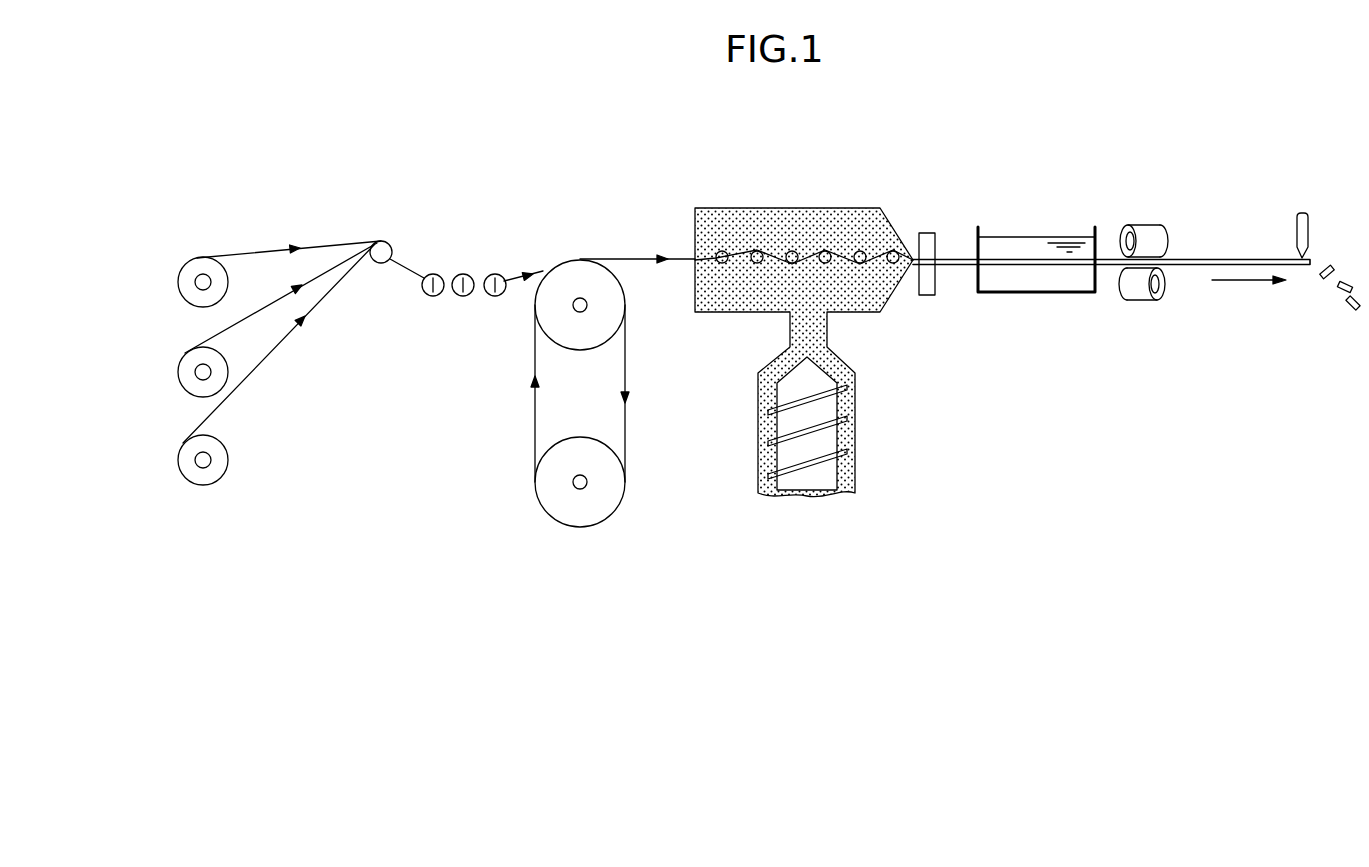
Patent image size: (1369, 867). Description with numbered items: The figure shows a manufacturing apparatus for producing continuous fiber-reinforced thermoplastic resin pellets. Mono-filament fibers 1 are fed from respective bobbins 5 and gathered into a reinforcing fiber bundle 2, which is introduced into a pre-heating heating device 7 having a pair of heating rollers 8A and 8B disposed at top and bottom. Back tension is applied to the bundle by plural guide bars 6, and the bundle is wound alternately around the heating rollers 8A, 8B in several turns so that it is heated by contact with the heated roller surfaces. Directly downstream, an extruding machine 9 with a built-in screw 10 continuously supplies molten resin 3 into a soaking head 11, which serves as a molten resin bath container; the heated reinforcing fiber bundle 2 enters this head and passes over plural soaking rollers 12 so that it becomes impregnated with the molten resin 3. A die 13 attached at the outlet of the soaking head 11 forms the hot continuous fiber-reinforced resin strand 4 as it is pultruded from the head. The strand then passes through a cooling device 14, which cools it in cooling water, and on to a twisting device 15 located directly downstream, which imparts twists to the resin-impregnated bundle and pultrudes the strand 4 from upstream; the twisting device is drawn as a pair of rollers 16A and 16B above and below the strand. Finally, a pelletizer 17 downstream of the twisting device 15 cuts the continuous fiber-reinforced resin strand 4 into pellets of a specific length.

The mono-filament fibers 1 is at (243, 253).
The reinforcing fiber bundle 2 is at (401, 287).
The molten resin 3 is at (812, 220).
The continuous fiber-reinforced resin strand 4 is at (963, 258).
The bobbins 5 is at (186, 262).
The guide bars 6 is at (432, 273).
The pre-heating heating device 7 is at (559, 392).
The heating roller 8A is at (545, 305).
The heating roller 8B is at (545, 484).
The extruding machine 9 is at (857, 395).
The screw 10 is at (828, 435).
The soaking head 11 is at (757, 208).
The soaking rollers 12 is at (722, 251).
The die 13 is at (927, 233).
The cooling device 14 is at (1006, 302).
The twisting device 15 is at (1159, 249).
The upper nip roller 16A is at (1155, 233).
The lower nip roller 16B is at (1135, 290).
The pelletizer 17 is at (1302, 213).